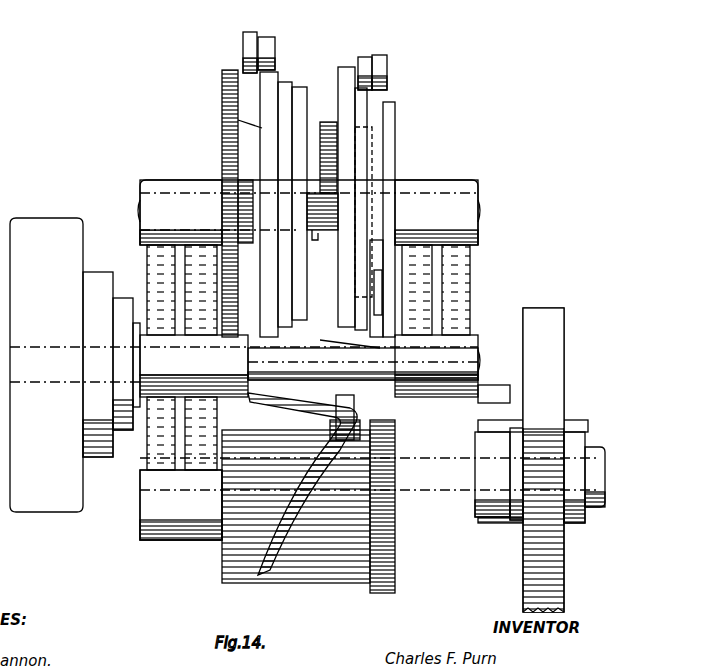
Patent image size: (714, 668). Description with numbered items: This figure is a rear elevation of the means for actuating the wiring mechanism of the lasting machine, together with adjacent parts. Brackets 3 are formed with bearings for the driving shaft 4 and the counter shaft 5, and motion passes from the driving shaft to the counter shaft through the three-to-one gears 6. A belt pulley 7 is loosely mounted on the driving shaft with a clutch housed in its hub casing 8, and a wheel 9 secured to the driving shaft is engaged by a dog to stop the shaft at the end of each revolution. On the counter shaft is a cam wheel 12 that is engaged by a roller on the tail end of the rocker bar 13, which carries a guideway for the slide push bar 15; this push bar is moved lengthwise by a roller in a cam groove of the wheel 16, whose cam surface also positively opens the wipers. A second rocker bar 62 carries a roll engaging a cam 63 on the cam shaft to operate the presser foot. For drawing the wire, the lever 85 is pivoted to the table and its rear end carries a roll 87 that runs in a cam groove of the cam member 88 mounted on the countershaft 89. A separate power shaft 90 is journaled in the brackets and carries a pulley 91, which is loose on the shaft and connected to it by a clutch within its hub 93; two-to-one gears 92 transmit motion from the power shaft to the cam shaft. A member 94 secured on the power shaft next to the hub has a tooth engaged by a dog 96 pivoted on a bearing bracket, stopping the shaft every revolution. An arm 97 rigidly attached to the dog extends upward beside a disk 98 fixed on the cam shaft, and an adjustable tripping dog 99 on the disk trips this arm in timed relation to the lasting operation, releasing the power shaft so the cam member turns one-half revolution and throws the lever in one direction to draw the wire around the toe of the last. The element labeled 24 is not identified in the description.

The brackets 3 is at (168, 181).
The driving shaft 4 is at (480, 360).
The counter shaft 5 is at (138, 212).
The three-to-one gears 6 is at (221, 80).
The belt pulley 7 is at (42, 220).
The hub casing 8 is at (95, 273).
The wheel 9 is at (124, 297).
The cam wheel 12 is at (346, 67).
The rocker bar 13 is at (327, 122).
The slide push bar 15 is at (318, 241).
The wheel 16 is at (283, 82).
The gear pair 24 is at (380, 56).
The rocker bar 62 is at (249, 32).
The cam 63 is at (238, 120).
The lever 85 is at (280, 400).
The roll 87 is at (350, 420).
The cam member 88 is at (300, 583).
The countershaft 89 is at (140, 516).
The power shaft 90 is at (606, 472).
The pulley 91 is at (540, 316).
The two-to-one gears 92 is at (396, 570).
The hub 93 is at (520, 440).
The member 94 is at (502, 524).
The dog 96 is at (498, 386).
The arm 97 is at (352, 346).
The disk 98 is at (396, 113).
The tripping dog 99 is at (382, 295).